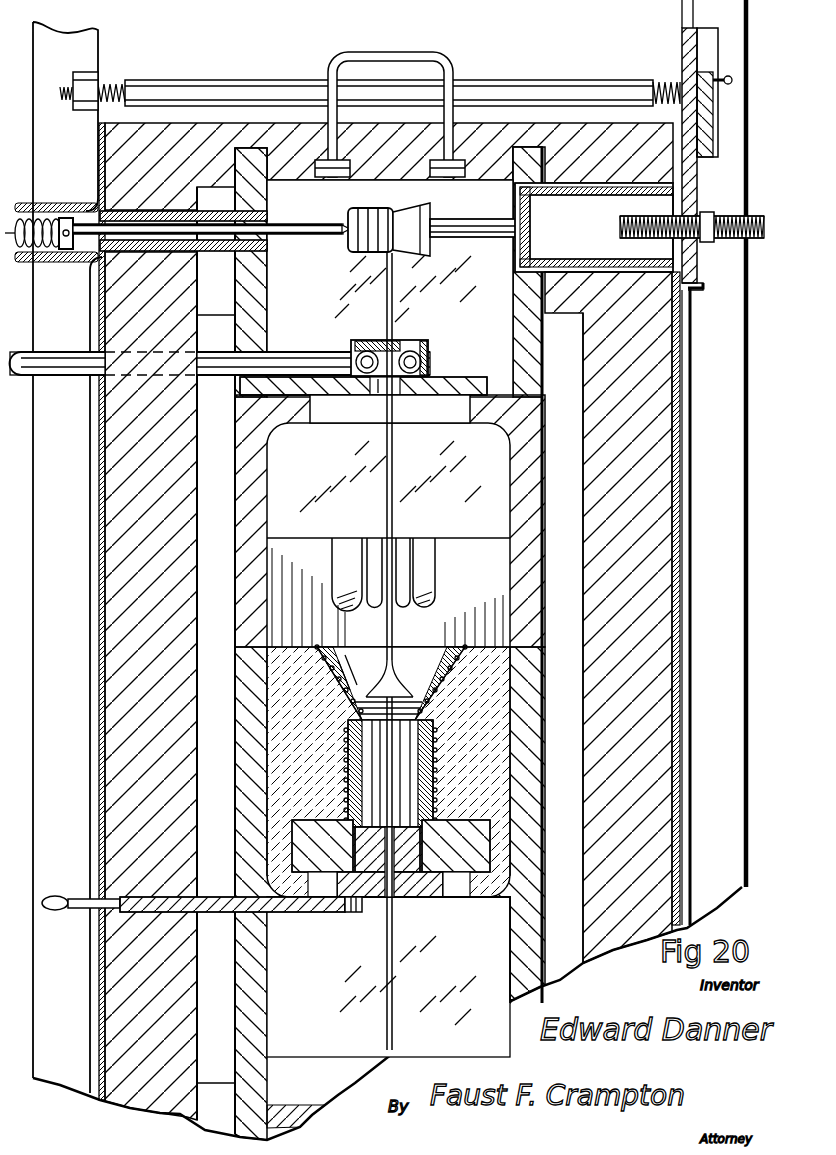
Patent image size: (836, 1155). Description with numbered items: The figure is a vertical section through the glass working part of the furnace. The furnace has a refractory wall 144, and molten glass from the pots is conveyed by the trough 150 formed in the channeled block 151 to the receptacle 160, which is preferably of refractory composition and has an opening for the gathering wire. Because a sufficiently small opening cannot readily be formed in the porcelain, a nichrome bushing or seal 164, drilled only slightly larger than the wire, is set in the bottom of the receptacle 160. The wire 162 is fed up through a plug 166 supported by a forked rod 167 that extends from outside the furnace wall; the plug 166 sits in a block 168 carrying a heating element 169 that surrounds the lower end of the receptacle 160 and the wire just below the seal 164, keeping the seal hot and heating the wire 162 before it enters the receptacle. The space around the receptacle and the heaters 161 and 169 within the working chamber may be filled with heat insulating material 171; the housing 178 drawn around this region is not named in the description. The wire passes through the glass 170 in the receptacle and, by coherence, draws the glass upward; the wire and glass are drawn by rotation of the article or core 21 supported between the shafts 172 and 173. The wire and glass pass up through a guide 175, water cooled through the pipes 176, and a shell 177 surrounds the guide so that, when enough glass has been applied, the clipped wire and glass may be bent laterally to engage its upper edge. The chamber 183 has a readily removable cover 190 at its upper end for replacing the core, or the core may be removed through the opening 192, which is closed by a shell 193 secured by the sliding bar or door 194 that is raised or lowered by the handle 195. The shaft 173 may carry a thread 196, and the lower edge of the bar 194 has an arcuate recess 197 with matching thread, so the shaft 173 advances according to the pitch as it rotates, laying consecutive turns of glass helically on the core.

The article or core 21 is at (408, 215).
The refractory wall 144 is at (117, 722).
The trough 150 is at (411, 547).
The block 151 is at (323, 556).
The receptacle 160 is at (412, 673).
The heater 161 is at (420, 711).
The wire 162 is at (392, 926).
The bushing or seal 164 is at (400, 743).
The plug 166 is at (353, 905).
The forked rod 167 is at (293, 913).
The block 168 is at (455, 829).
The heating element 169 is at (347, 777).
The glass 170 is at (352, 712).
The heat insulating material 171 is at (480, 793).
The shaft 172 is at (292, 231).
The shaft 173 is at (560, 228).
The guide 175 is at (413, 345).
The pipes 176 is at (290, 353).
The shell 177 is at (428, 353).
The housing 178 is at (486, 576).
The chamber 183 is at (297, 265).
The cover 190 is at (465, 133).
The opening 192 is at (583, 180).
The shell 193 is at (688, 292).
The sliding bar or door 194 is at (706, 186).
The handle 195 is at (726, 75).
The thread 196 is at (680, 224).
The arcuate recess 197 is at (712, 222).